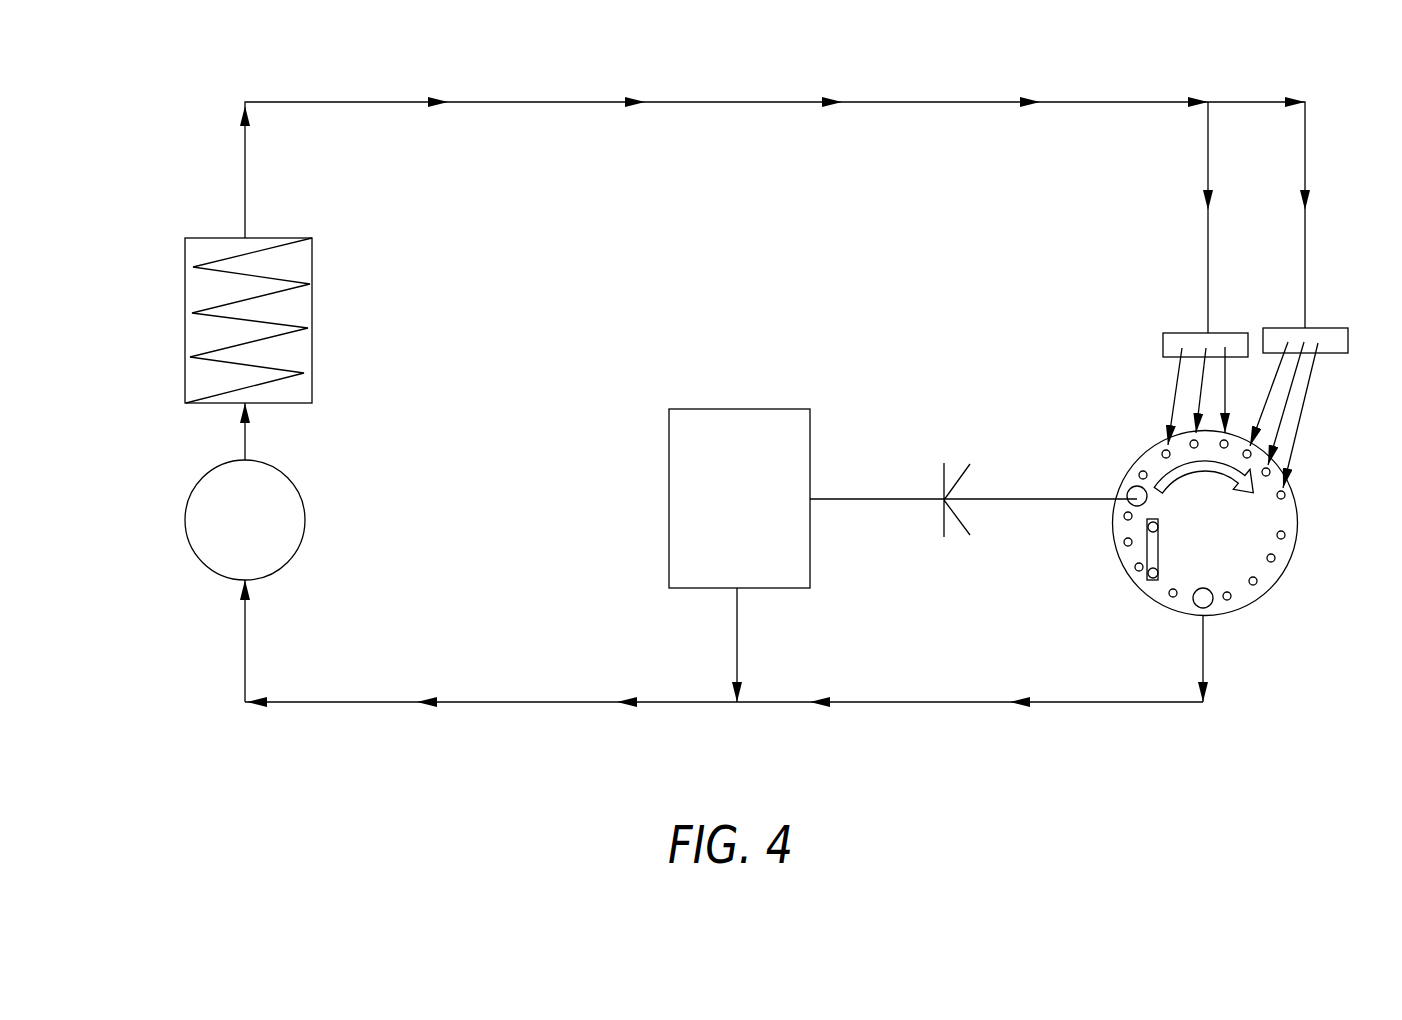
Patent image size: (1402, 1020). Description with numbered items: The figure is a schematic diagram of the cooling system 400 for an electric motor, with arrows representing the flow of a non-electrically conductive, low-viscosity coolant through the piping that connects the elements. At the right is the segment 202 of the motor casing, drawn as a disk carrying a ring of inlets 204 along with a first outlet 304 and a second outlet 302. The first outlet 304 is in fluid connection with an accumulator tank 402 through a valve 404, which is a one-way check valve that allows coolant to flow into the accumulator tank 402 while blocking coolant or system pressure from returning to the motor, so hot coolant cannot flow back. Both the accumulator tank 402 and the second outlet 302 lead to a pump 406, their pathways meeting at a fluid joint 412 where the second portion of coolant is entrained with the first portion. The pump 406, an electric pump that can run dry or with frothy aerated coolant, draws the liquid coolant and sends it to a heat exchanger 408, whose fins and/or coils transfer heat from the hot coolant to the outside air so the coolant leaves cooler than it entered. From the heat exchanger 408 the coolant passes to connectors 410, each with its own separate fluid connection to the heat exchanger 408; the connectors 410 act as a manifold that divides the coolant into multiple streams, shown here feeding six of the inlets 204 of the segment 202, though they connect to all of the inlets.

The cooling system 400 is at (138, 110).
The accumulator tank 402 is at (687, 437).
The valve 404 is at (958, 470).
The pump 406 is at (210, 543).
The heat exchanger 408 is at (200, 337).
The connectors 410 is at (1228, 342).
The fluid joint 412 is at (735, 699).
The segment 202 is at (1270, 573).
The inlets 204 is at (1287, 495).
The second outlet 302 is at (1208, 600).
The first outlet 304 is at (1133, 488).